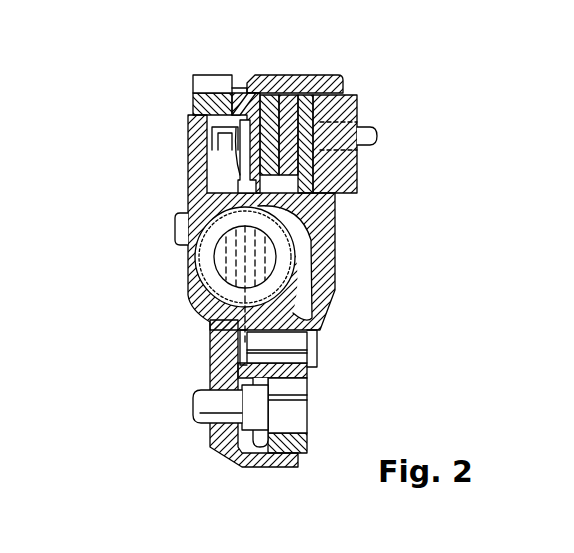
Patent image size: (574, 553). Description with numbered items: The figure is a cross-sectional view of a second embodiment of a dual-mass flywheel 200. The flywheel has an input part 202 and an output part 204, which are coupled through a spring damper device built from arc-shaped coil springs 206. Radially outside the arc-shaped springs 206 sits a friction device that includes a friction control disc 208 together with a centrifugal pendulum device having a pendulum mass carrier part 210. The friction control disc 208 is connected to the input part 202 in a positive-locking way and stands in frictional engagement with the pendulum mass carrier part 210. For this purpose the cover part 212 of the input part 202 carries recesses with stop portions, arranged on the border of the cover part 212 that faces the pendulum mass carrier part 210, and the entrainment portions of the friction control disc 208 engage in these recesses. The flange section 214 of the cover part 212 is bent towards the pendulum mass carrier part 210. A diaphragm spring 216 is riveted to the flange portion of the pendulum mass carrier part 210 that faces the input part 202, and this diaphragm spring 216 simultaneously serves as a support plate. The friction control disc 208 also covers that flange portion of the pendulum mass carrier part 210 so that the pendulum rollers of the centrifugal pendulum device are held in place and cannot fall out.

The dual-mass flywheel 200 is at (324, 349).
The input part 202 is at (151, 239).
The output part 204 is at (339, 263).
The arc-shaped coil springs 206 is at (212, 285).
The friction control disc 208 is at (210, 142).
The pendulum mass carrier part 210 is at (303, 110).
The cover part 212 is at (297, 223).
The flange section 214 is at (215, 127).
The diaphragm spring 216 is at (205, 167).